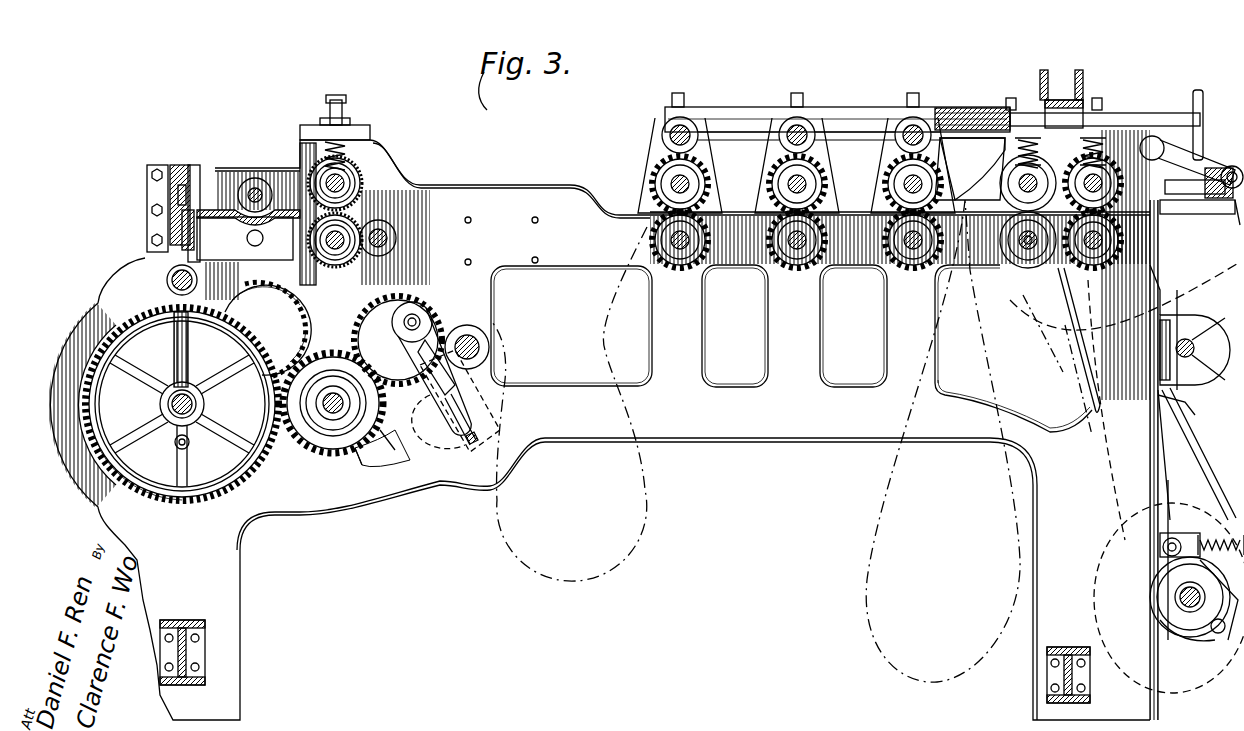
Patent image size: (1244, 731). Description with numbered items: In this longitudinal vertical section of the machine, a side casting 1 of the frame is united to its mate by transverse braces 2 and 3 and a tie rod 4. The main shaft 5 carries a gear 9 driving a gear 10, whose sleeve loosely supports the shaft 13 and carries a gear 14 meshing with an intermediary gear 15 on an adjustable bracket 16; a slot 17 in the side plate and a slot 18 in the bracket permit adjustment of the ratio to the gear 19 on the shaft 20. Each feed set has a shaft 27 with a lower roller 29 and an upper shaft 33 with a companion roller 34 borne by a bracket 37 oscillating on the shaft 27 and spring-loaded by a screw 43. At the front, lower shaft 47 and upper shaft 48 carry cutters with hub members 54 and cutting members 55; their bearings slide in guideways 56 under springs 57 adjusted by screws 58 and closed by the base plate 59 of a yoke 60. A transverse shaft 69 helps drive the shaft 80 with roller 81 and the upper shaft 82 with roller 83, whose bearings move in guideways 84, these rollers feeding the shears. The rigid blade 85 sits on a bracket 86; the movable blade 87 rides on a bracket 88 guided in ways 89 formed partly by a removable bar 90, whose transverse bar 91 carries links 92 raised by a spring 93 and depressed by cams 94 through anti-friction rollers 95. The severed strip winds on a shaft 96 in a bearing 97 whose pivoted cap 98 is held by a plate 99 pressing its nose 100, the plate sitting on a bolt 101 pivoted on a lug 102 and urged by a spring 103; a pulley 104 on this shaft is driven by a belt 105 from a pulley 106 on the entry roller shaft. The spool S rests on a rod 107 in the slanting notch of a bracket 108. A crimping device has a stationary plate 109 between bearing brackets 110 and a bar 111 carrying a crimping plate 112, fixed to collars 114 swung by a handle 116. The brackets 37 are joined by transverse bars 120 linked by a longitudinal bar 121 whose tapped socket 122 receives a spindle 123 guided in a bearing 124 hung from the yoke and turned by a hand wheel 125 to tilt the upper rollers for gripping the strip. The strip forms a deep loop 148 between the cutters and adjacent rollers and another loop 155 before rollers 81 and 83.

The frame plate 1 is at (690, 445).
The foot 2 is at (205, 630).
The foot 3 is at (1047, 700).
The roller 4 is at (257, 188).
The main gear wheel 5 is at (170, 405).
The gear 9 is at (268, 329).
The frame lug 10 is at (370, 452).
The gear 13 is at (335, 415).
The gear 14 is at (380, 318).
The arm 15 is at (435, 355).
The link 16 is at (445, 385).
The screw 17 is at (468, 445).
The slot 18 is at (455, 420).
The pivot 19 is at (435, 340).
The roller 20 is at (385, 232).
The gear 27 is at (700, 262).
The shaft 29 is at (685, 245).
The feed roller 33 is at (690, 195).
The shaft 34 is at (685, 185).
The bracket 37 is at (648, 158).
The screw 43 is at (678, 93).
The roller 47 is at (1025, 250).
The bracket 48 is at (970, 168).
The roller 54 is at (1020, 180).
The shaft 55 is at (1028, 248).
The bearing block 56 is at (1028, 140).
The cap 57 is at (350, 125).
The screw 58 is at (342, 110).
The post 59 is at (1036, 73).
The post 60 is at (1064, 73).
The roller 69 is at (489, 345).
The roller 80 is at (320, 260).
The shaft 81 is at (335, 248).
The roller 82 is at (355, 170).
The shaft 83 is at (340, 183).
The spring 84 is at (345, 150).
The bolt 85 is at (182, 225).
The block 86 is at (245, 210).
The bolt 87 is at (178, 196).
The plate 88 is at (180, 165).
The plate 89 is at (197, 165).
The plate 90 is at (147, 175).
The gear 91 is at (262, 295).
The rack 92 is at (191, 345).
The roller 93 is at (167, 282).
The gear 94 is at (286, 334).
The wheel rim 95 is at (150, 500).
The ratchet wheel 96 is at (1180, 597).
The pawl 97 is at (1180, 636).
The pin 98 is at (1218, 633).
The lever 99 is at (1178, 455).
The spring 100 is at (1192, 540).
The lever 101 is at (1198, 454).
The pawl 102 is at (1160, 545).
The pin 103 is at (1165, 553).
The shaft 104 is at (1180, 597).
The rod 105 is at (1183, 402).
The lug 106 is at (1150, 292).
The pin 107 is at (1194, 348).
The bracket 108 is at (1205, 320).
The link 109 is at (1222, 218).
The shaft 110 is at (1197, 206).
The shaft 111 is at (1190, 180).
The block 112 is at (1225, 168).
The arm 114 is at (1238, 170).
The lever 116 is at (1180, 150).
The roller 120 is at (662, 135).
The bar 121 is at (755, 102).
The threaded sleeve 122 is at (960, 108).
The shaft 123 is at (1140, 113).
The bracket 124 is at (1070, 100).
The handle 125 is at (1198, 90).
The roll outline 148 is at (905, 660).
The roll outline 155 is at (610, 575).
The sheet S is at (1125, 285).